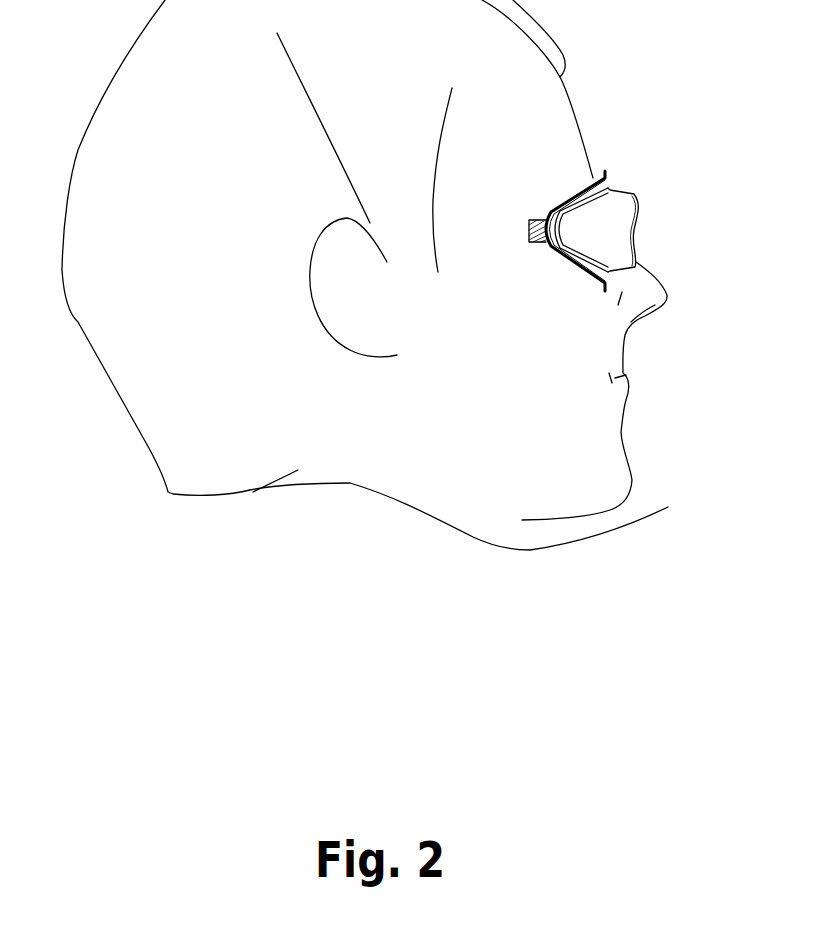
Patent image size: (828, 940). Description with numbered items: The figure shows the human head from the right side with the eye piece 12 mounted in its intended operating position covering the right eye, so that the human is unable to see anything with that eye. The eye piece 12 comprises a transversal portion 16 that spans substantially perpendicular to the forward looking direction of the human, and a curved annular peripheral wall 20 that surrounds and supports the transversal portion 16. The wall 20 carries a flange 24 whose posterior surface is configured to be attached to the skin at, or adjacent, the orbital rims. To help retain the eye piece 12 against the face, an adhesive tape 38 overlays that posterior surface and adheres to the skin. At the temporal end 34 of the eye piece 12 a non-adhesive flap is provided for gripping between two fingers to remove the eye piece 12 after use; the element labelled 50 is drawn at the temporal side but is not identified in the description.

The eye piece 12 is at (620, 171).
The transversal portion 16 is at (637, 233).
The curved annular peripheral wall 20 is at (609, 240).
The flange 24 is at (562, 207).
The temporal end 34 is at (548, 252).
The adhesive tape 38 is at (587, 279).
The strap attachment tab 50 is at (540, 236).